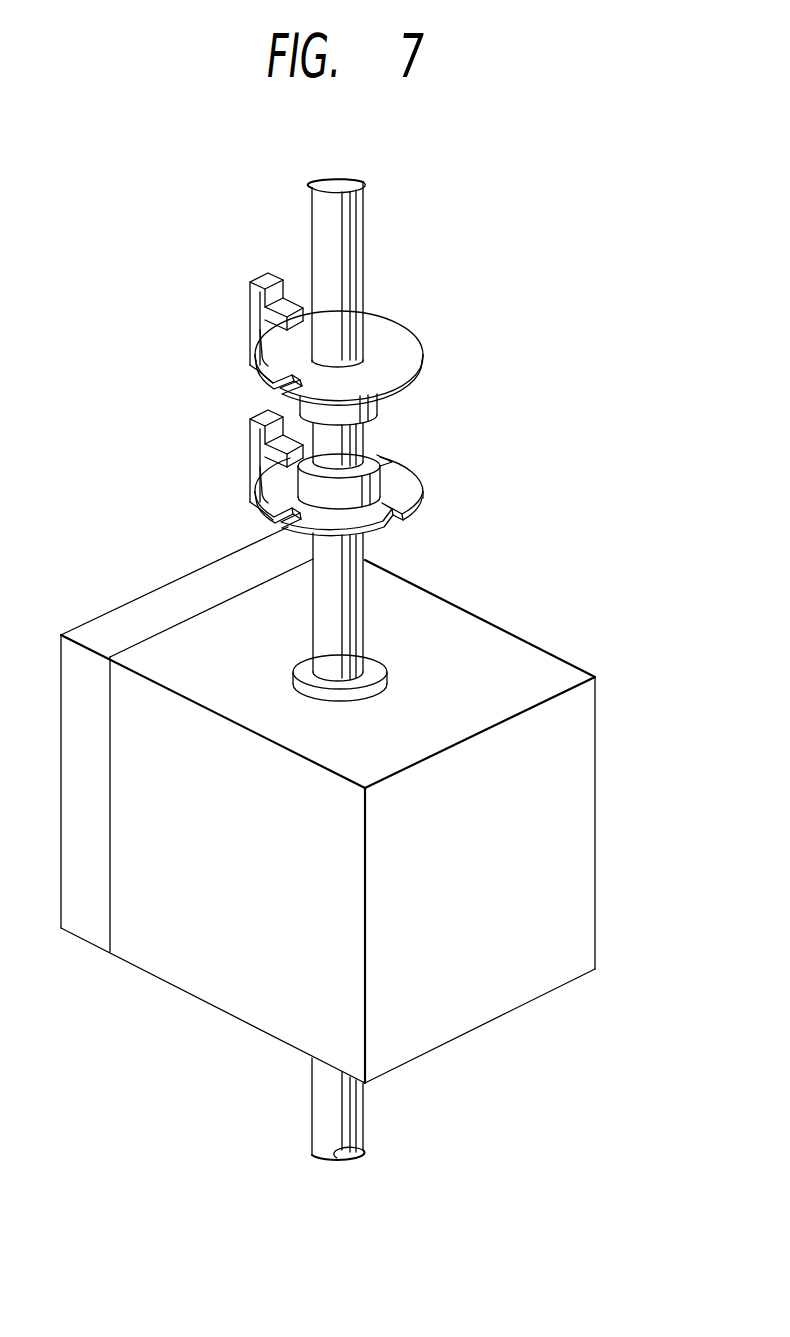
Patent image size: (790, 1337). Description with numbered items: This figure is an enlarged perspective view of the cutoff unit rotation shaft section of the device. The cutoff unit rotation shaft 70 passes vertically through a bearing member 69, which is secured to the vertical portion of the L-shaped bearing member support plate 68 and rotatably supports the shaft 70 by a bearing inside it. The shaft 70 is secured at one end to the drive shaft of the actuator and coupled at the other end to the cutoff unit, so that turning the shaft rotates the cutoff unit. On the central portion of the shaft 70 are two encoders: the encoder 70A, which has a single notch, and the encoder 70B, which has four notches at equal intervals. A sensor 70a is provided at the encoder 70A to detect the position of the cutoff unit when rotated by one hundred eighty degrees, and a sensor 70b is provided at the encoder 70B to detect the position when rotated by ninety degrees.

The cutoff unit rotation shaft 70 is at (357, 232).
The encoder 70A is at (400, 333).
The encoder 70B is at (413, 483).
The sensor 70a is at (266, 281).
The sensor 70b is at (252, 430).
The bearing member support plate 68 is at (106, 625).
The bearing member 69 is at (465, 625).